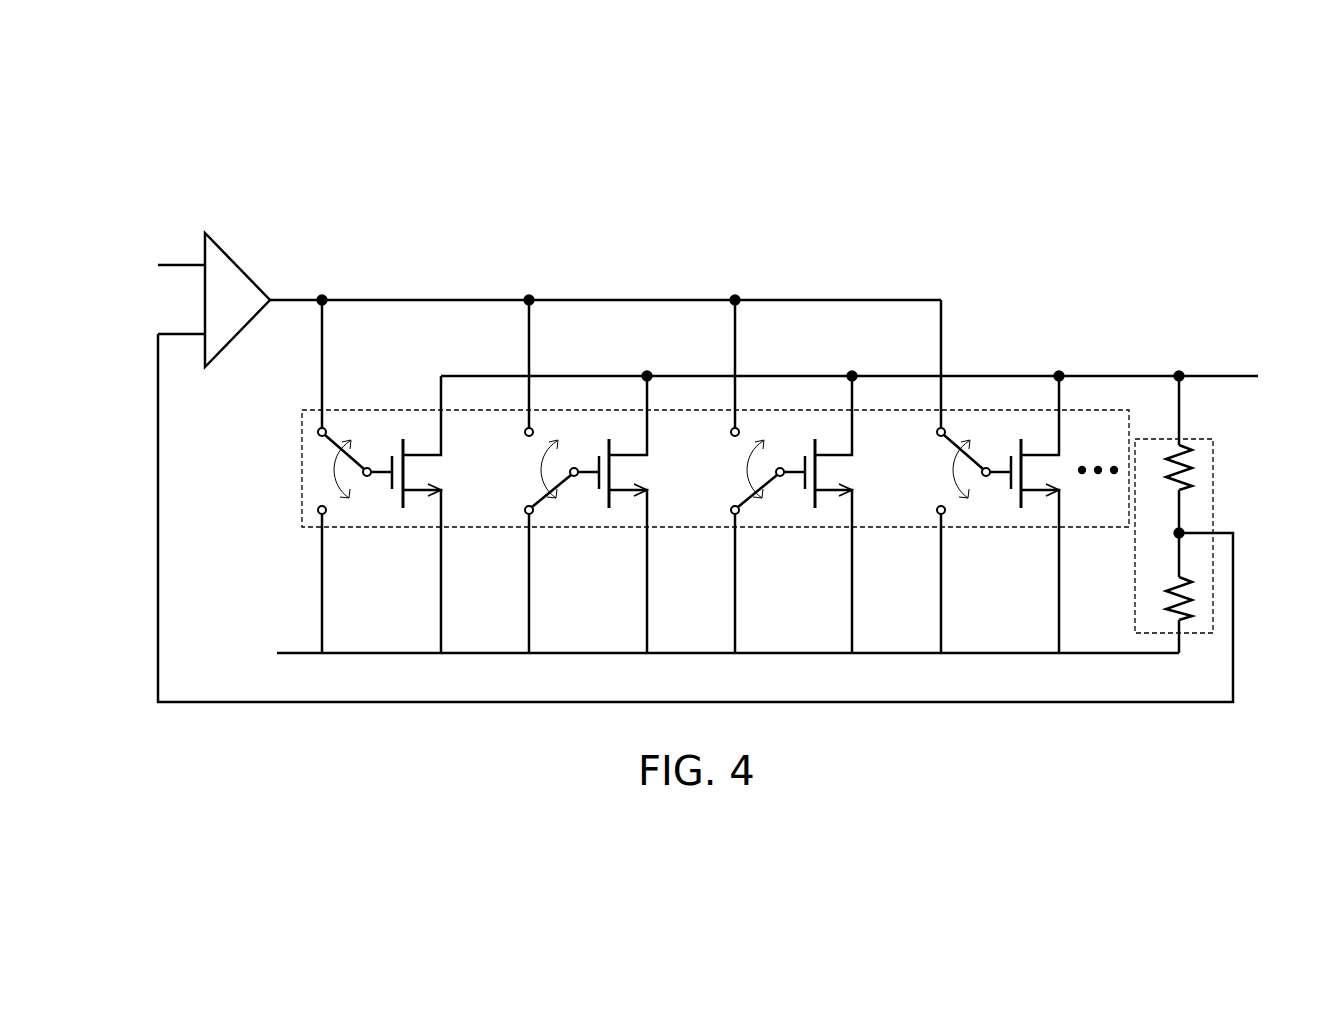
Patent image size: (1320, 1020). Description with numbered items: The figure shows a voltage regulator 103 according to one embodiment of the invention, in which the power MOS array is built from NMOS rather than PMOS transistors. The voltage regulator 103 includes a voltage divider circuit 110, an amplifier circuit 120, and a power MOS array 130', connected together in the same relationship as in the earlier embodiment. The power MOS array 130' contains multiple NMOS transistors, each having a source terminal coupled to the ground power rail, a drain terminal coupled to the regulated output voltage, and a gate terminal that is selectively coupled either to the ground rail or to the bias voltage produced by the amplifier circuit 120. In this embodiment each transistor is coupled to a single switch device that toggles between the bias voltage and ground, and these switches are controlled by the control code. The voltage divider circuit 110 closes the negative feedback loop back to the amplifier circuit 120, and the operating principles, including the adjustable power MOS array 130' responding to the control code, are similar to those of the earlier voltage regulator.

The voltage regulator 103 is at (1312, 109).
The amplifier circuit 120 is at (250, 266).
The power MOS array 130' is at (674, 476).
The voltage divider circuit 110 is at (1214, 486).